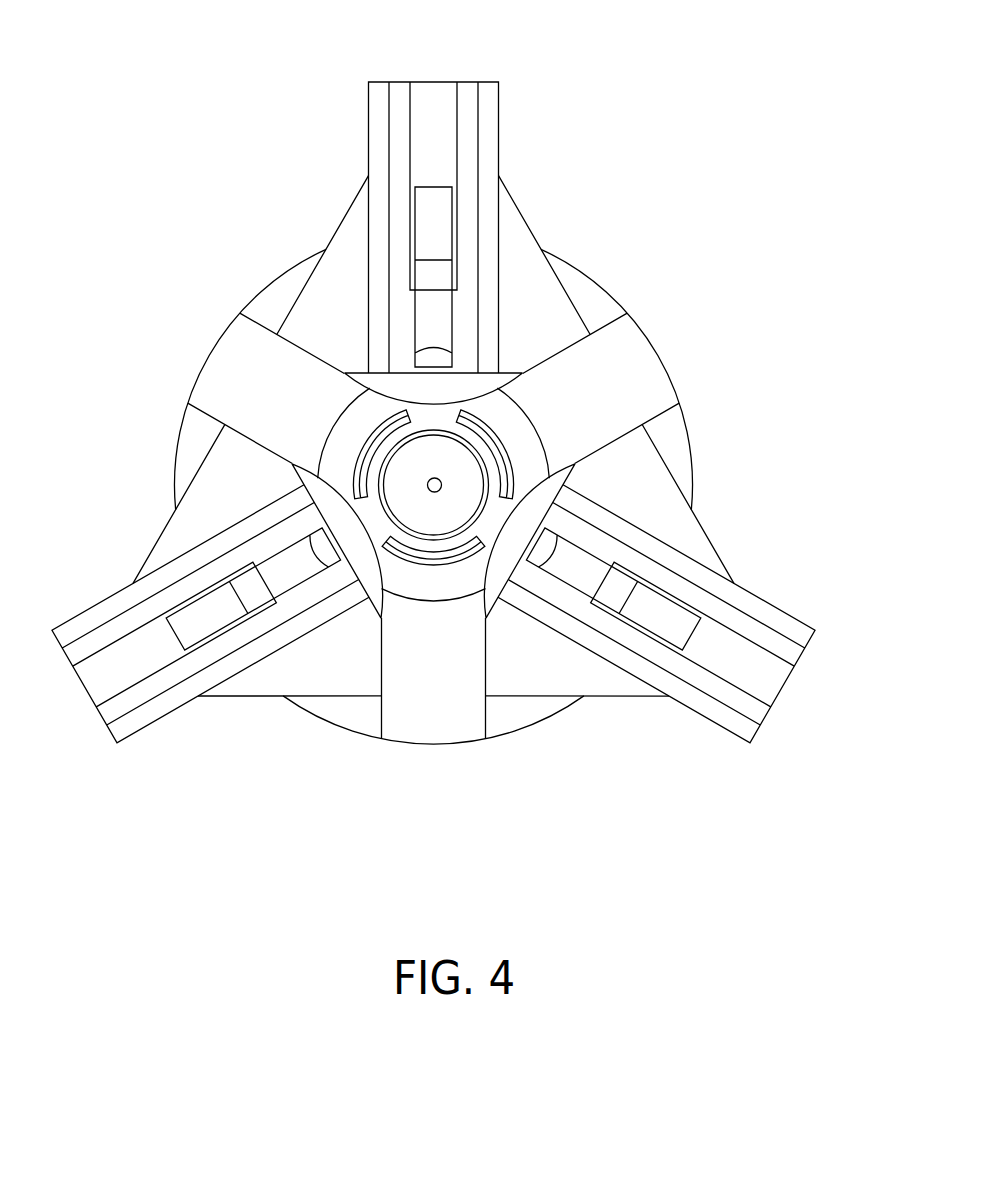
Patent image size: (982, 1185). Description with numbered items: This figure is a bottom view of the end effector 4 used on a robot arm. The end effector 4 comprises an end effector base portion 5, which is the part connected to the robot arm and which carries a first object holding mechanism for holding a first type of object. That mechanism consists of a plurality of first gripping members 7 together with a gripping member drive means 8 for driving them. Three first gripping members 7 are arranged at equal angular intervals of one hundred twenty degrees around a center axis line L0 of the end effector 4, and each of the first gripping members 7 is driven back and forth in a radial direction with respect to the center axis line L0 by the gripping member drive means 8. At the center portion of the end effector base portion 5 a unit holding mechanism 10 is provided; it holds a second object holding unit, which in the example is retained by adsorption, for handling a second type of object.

The end effector 4 is at (735, 140).
The end effector base portion 5 is at (612, 295).
The first gripping member 7 is at (443, 315).
The gripping member drive means 8 is at (432, 90).
The unit holding mechanism 10 is at (428, 540).
The center axis line L0 is at (437, 483).